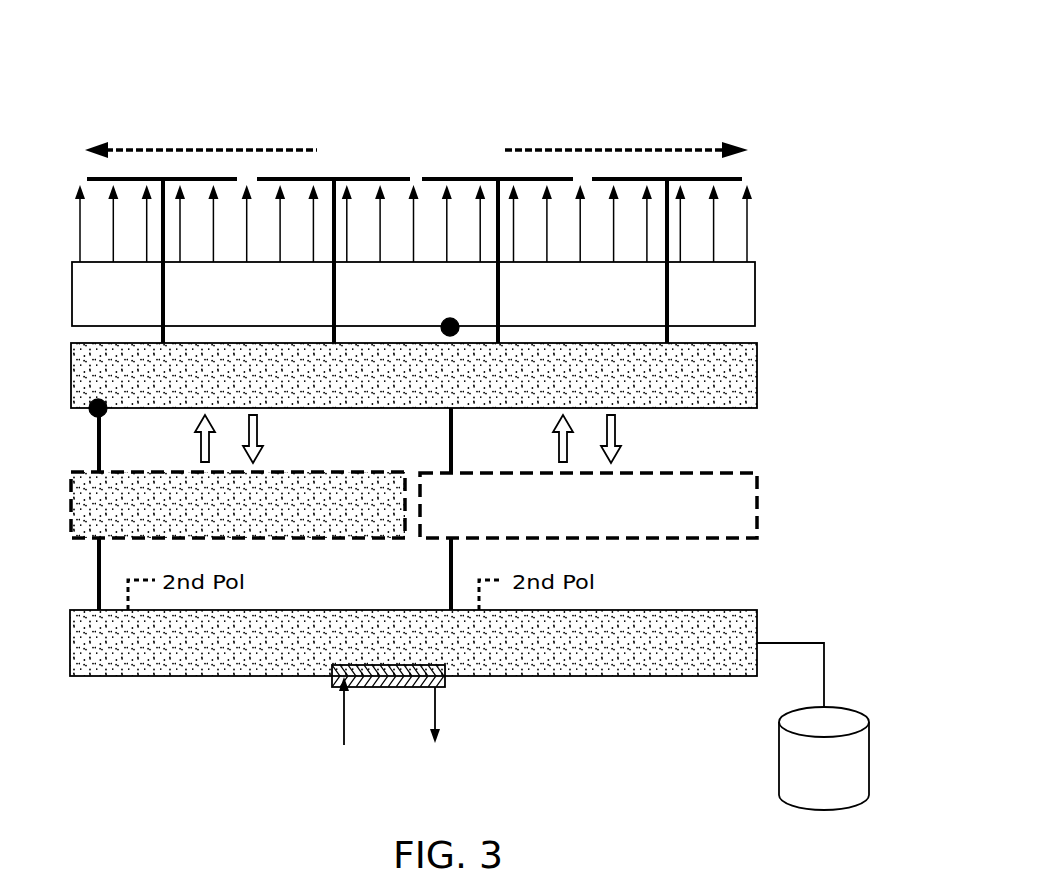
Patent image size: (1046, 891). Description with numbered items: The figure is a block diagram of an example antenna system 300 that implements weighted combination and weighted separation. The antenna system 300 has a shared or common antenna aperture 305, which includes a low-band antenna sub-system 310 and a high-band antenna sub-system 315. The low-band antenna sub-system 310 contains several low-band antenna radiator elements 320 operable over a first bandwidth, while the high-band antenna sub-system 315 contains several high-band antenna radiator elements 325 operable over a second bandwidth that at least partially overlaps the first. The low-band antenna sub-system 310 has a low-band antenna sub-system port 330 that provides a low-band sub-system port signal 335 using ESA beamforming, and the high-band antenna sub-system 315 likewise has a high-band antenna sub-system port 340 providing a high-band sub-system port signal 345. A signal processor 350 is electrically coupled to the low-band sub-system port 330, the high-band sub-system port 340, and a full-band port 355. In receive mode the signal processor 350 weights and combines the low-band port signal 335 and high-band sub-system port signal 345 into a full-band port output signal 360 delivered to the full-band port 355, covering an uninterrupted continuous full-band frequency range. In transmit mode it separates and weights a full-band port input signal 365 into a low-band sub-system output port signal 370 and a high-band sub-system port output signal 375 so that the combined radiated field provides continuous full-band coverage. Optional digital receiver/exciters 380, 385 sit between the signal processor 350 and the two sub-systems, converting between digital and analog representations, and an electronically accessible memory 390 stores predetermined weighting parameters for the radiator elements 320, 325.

The antenna system 300 is at (549, 54).
The shared or common antenna aperture 305 is at (683, 146).
The low-band antenna sub-system 310 is at (431, 386).
The high-band antenna sub-system 315 is at (433, 304).
The low-band antenna radiator elements 320 is at (742, 179).
The high-band antenna radiator elements 325 is at (750, 231).
The low-band antenna sub-system port 330 is at (90, 413).
The low-band sub-system port signal 335 is at (261, 446).
The high-band antenna sub-system port 340 is at (458, 321).
The high-band sub-system port signal 345 is at (619, 446).
The signal processor 350 is at (559, 661).
The full-band port 355 is at (333, 668).
The full-band port output signal 360 is at (446, 723).
The full-band port input signal 365 is at (343, 735).
The low-band sub-system output port signal 370 is at (197, 446).
The high-band sub-system port output signal 375 is at (555, 446).
The digital receiver/exciter 380 is at (256, 516).
The digital receiver/exciter 385 is at (606, 516).
The electronically accessible memory 390 is at (843, 779).